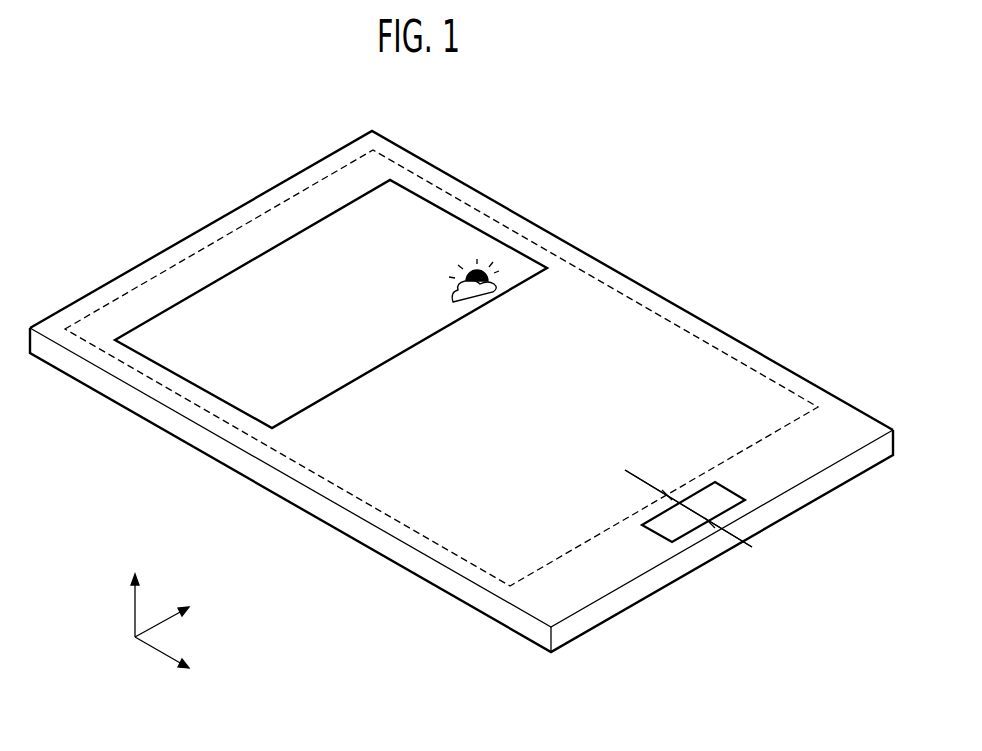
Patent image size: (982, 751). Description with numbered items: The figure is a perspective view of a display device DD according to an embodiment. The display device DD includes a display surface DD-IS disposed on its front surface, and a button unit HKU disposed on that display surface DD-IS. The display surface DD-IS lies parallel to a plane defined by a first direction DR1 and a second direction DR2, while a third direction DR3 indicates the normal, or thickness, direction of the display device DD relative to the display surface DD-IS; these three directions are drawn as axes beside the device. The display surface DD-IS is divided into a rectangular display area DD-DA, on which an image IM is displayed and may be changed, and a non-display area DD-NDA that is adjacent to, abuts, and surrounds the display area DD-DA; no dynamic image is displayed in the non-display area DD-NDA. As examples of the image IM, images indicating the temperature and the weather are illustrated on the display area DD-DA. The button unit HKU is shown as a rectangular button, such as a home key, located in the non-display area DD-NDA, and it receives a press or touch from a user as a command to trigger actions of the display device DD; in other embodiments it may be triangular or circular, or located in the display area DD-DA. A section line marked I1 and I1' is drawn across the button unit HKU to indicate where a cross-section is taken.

The display device DD is at (461, 371).
The display surface DD-IS is at (461, 373).
The display area DD-DA is at (258, 232).
The non-display area DD-NDA is at (170, 259).
The image IM is at (470, 223).
The button unit HKU is at (733, 490).
The section line I1 is at (698, 516).
The section line I1' is at (678, 500).
The first direction DR1 is at (179, 661).
The second direction DR2 is at (180, 616).
The third direction DR3 is at (134, 591).